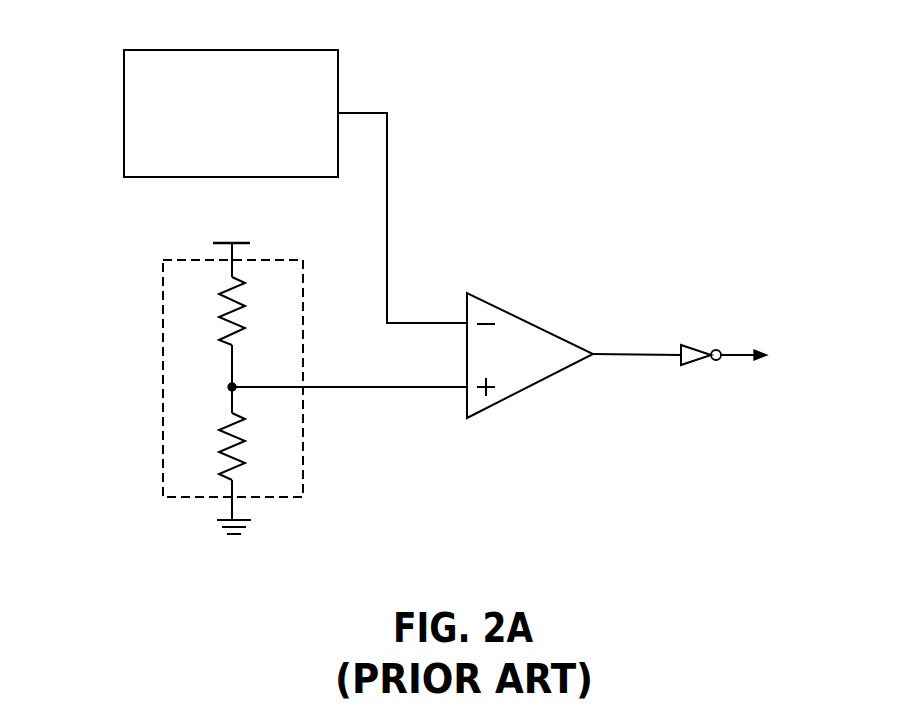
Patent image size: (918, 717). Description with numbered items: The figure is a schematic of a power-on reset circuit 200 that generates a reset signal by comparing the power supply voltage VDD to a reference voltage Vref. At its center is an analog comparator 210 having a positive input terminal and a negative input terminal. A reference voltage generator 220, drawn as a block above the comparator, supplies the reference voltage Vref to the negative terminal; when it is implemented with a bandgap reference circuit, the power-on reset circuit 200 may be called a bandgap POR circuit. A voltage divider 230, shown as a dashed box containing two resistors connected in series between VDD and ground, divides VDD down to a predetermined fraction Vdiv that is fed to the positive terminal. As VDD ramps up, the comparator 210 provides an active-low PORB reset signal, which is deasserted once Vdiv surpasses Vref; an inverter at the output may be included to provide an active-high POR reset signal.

The power-on reset circuit 200 is at (467, 177).
The analog comparator 210 is at (540, 366).
The reference voltage generator 220 is at (230, 49).
The voltage divider 230 is at (160, 301).